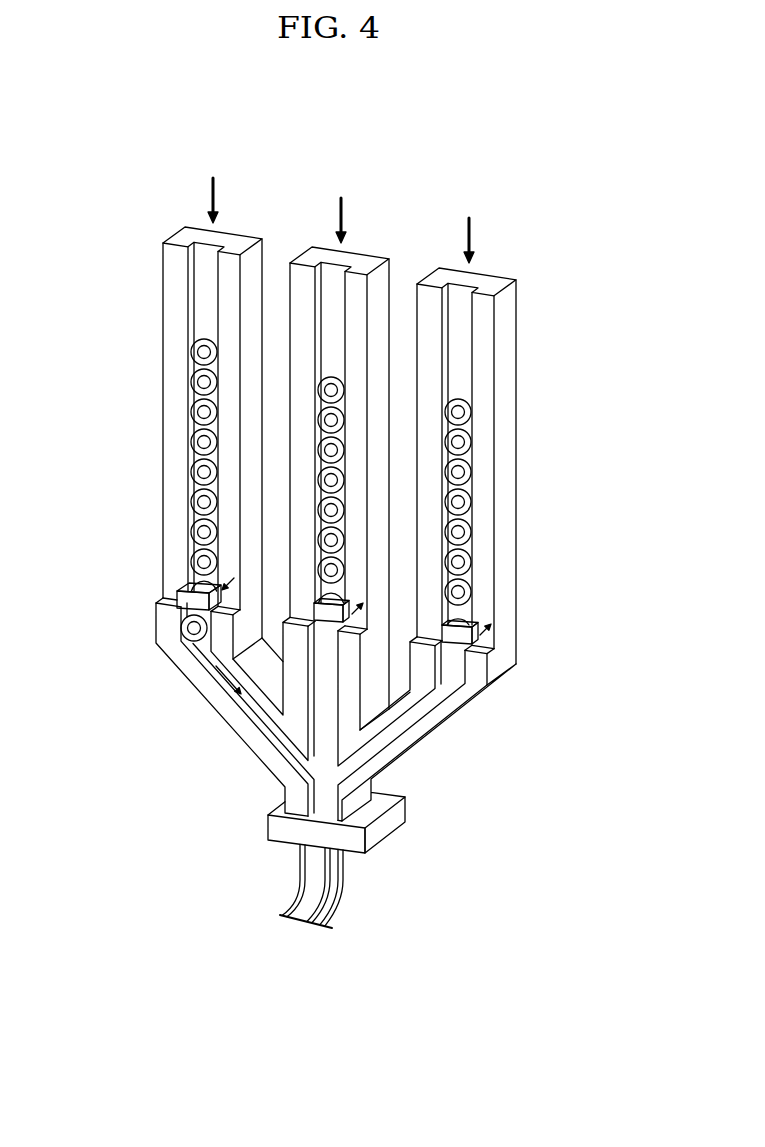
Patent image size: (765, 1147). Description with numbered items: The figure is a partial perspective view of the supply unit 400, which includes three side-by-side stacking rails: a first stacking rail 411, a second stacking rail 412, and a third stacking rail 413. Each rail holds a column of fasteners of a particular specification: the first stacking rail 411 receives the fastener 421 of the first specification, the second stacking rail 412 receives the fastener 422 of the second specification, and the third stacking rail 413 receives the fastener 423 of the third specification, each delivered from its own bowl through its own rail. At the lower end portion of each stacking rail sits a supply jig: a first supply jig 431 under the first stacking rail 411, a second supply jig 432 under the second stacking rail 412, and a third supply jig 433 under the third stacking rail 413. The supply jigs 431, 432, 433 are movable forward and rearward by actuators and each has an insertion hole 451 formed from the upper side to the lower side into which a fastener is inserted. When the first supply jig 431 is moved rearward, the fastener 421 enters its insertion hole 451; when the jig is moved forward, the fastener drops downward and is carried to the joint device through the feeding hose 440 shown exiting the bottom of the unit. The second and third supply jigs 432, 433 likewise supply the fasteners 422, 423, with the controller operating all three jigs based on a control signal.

The supply unit 400 is at (143, 627).
The first stacking rail 411 is at (236, 238).
The second stacking rail 412 is at (360, 262).
The third stacking rail 413 is at (490, 283).
The fastener of the first specification 421 is at (204, 381).
The fastener of the second specification 422 is at (333, 390).
The fastener of the third specification 423 is at (460, 441).
The first supply jig 431 is at (190, 600).
The second supply jig 432 is at (318, 607).
The third supply jig 433 is at (465, 635).
The feeding hose 440 is at (297, 910).
The insertion hole 451 is at (193, 585).